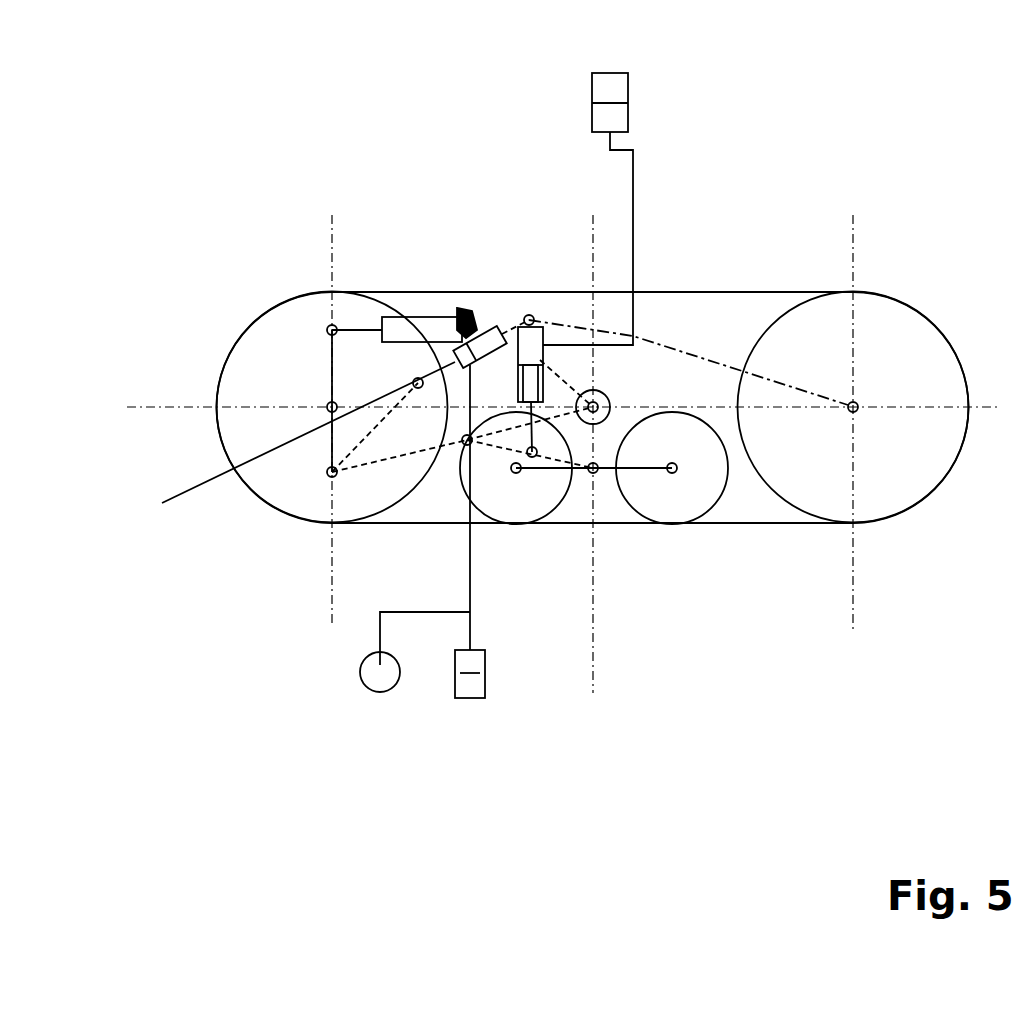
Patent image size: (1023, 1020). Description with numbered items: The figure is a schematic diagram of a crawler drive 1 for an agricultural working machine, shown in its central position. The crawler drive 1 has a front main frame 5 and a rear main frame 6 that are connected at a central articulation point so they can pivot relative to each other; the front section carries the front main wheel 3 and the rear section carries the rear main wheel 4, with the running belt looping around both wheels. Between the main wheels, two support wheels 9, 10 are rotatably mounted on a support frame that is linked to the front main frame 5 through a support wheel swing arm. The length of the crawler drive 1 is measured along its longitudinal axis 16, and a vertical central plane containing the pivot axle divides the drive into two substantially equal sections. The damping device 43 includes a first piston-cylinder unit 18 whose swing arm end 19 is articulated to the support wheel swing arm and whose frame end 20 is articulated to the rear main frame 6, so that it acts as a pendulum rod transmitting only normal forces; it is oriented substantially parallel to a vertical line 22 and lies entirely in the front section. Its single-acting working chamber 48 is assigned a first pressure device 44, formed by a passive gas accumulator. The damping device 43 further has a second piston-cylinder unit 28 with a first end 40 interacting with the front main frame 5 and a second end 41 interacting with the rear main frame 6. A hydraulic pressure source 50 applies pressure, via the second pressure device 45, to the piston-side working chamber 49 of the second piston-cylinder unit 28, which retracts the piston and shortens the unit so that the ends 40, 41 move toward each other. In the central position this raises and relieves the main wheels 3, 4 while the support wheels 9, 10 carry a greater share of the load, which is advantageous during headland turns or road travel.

The crawler drive 1 is at (814, 152).
The front main wheel 3 is at (262, 498).
The rear main wheel 4 is at (925, 345).
The front main frame 5 is at (400, 500).
The rear main frame 6 is at (667, 340).
The support wheel 9 is at (512, 502).
The support wheel 10 is at (692, 495).
The longitudinal axis 16 is at (175, 407).
The piston-cylinder unit 18 is at (512, 330).
The swing arm end 19 is at (552, 500).
The frame end 20 is at (589, 299).
The second end 41 is at (593, 407).
The vertical line 22 is at (666, 454).
The second piston-cylinder unit 28 is at (455, 335).
The first end 40 is at (296, 441).
The damping device 43 is at (482, 300).
The first pressure device 44 is at (632, 66).
The second pressure device 45 is at (448, 695).
The working chamber 48 is at (523, 318).
The working chamber 49 is at (455, 355).
The hydraulic pressure source 50 is at (360, 672).